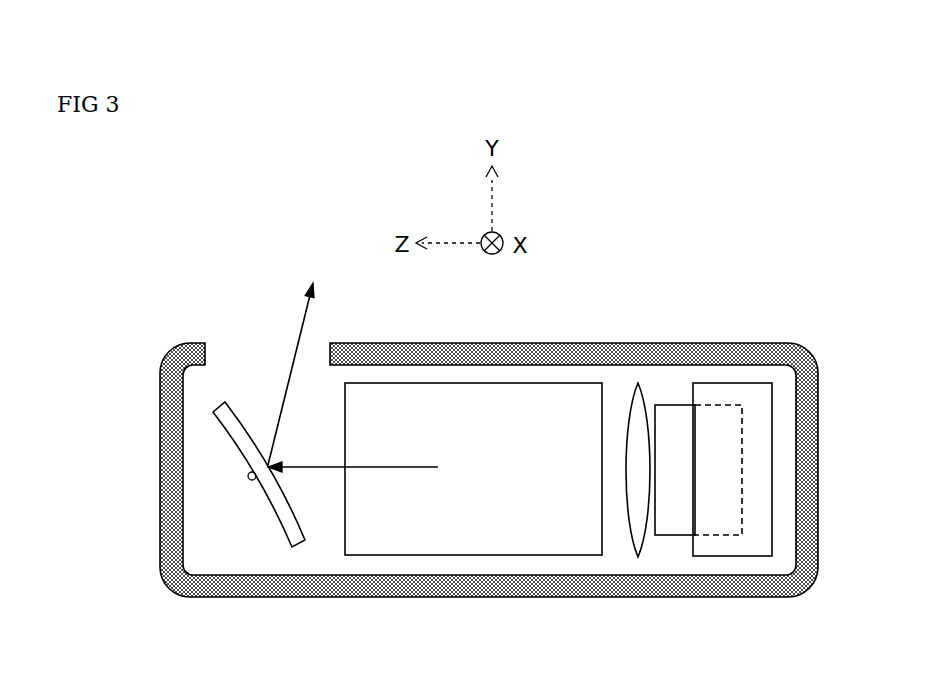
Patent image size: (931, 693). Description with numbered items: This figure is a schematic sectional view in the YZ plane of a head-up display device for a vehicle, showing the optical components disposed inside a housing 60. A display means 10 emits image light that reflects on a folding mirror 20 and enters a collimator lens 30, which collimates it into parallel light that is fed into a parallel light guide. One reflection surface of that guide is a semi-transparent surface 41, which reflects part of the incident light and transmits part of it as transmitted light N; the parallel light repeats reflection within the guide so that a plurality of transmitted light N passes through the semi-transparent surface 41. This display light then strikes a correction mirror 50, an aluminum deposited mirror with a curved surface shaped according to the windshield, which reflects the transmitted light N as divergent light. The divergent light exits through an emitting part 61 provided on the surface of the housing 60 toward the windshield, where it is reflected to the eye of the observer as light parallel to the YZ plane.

The display means 10 is at (677, 405).
The folding mirror 20 is at (723, 383).
The collimator lens 30 is at (638, 383).
The semi-transparent surface 41 is at (495, 383).
The correction mirror 50 is at (288, 517).
The housing 60 is at (540, 597).
The emitting part 61 is at (228, 352).
The transmitted light N is at (410, 465).